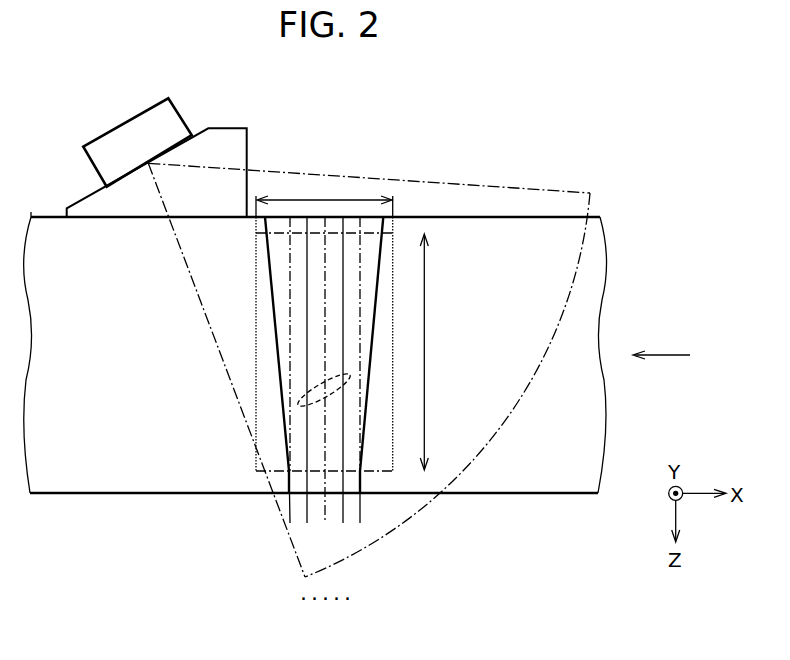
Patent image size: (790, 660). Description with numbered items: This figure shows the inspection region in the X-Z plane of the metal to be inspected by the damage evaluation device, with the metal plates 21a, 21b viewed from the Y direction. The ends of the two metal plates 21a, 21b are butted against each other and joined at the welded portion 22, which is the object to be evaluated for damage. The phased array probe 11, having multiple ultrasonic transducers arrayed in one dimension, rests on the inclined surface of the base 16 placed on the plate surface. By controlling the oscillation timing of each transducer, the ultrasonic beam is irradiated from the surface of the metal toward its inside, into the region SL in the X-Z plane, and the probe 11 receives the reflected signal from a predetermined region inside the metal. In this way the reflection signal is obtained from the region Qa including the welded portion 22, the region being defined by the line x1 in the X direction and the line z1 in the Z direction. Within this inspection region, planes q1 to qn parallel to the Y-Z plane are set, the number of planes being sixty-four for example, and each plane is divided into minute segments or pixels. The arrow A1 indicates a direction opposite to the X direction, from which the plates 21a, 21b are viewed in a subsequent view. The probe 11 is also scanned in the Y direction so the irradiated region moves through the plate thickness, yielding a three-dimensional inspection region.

The phased array probe 11 is at (133, 117).
The base 16 is at (247, 143).
The welded portion 22 is at (353, 217).
The metal plate 21a is at (107, 482).
The metal plate 21b is at (517, 480).
The region SL is at (510, 195).
The region Qa is at (430, 285).
The plane q1 is at (290, 512).
The plane qn is at (358, 512).
The line x1 is at (324, 191).
The line z1 is at (437, 352).
The direction A1 is at (681, 356).